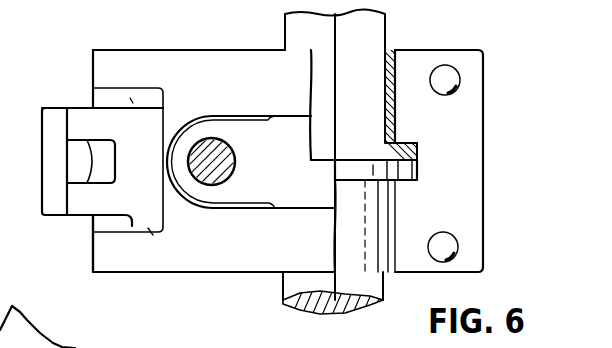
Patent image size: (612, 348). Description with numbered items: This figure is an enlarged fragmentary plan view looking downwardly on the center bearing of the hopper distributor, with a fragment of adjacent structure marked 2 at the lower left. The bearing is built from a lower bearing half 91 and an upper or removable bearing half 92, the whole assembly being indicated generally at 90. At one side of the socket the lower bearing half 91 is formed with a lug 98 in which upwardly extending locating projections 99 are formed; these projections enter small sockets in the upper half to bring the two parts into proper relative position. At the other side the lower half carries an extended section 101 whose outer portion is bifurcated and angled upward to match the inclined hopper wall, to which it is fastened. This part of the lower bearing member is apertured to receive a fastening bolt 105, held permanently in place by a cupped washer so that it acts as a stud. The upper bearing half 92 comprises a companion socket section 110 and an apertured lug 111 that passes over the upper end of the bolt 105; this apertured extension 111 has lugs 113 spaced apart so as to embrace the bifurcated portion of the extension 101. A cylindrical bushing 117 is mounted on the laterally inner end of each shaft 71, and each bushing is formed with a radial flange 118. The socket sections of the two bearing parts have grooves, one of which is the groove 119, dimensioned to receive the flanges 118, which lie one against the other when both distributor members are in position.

The adjacent figure fragment 2 is at (118, 345).
The shaft 71 is at (372, 32).
The mounting assembly 90 is at (516, 138).
The lower bearing half 91 is at (490, 215).
The upper bearing half 92 is at (226, 60).
The lug 98 is at (467, 182).
The locating projections 99 is at (457, 80).
The extended section 101 is at (143, 110).
The fastening bolt 105 is at (218, 167).
The companion socket section 110 is at (232, 262).
The apertured lug 111 is at (245, 133).
The lugs 113 is at (107, 63).
The cylindrical bushing 117 is at (388, 103).
The radial flange 118 is at (408, 150).
The groove 119 is at (417, 164).